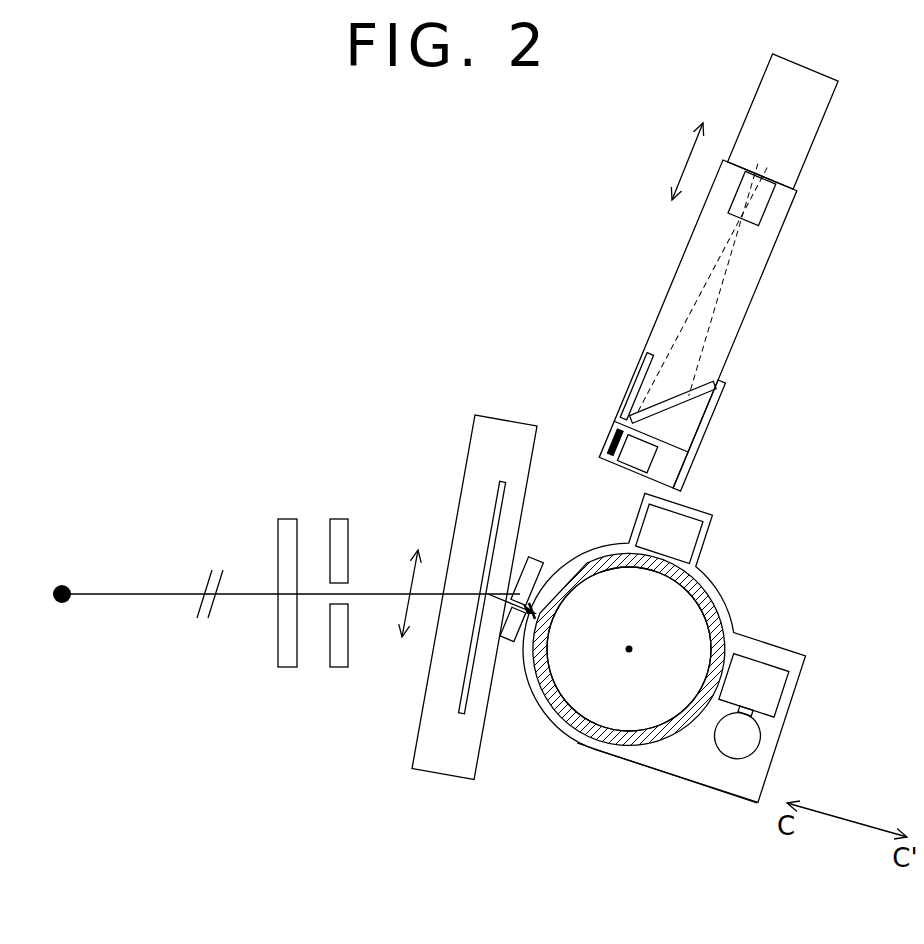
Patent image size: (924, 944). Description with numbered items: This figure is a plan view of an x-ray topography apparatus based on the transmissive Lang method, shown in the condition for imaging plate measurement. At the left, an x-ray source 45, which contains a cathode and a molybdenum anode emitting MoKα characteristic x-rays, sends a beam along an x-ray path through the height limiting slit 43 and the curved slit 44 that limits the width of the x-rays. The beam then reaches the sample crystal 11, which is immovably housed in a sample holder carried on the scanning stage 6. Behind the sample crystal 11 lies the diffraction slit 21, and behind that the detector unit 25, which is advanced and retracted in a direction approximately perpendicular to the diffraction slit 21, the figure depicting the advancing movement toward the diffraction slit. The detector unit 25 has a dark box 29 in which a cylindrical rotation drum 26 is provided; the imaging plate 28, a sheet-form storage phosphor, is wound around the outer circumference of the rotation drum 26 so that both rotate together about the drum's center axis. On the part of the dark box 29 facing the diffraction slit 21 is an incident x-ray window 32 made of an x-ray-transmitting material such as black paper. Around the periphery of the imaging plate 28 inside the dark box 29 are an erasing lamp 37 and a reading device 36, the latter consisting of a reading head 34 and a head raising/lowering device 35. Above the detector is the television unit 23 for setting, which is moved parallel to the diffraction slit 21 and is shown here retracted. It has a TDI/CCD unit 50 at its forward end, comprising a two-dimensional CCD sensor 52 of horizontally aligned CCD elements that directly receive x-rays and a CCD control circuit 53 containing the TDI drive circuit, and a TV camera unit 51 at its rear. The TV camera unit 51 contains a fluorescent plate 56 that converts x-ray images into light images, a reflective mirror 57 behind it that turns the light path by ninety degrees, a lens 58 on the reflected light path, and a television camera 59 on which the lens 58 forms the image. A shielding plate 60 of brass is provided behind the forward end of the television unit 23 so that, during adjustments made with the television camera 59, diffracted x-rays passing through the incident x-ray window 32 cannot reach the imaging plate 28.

The scanning stage 6 is at (416, 733).
The sample crystal 11 is at (493, 515).
The diffraction slit 21 is at (507, 640).
The television unit for setting 23 is at (630, 228).
The detector unit 25 is at (757, 598).
The rotation drum 26 is at (587, 717).
The imaging plate 28 is at (582, 565).
The dark box 29 is at (610, 756).
The incident x-ray window 32 is at (519, 634).
The reading head 34 is at (768, 678).
The head raising/lowering device 35 is at (789, 733).
The reading device 36 is at (815, 702).
The erasing lamp 37 is at (672, 540).
The height limiting slit 43 is at (287, 519).
The curved slit 44 is at (338, 519).
The x-ray source 45 is at (60, 590).
The TDI/CCD unit 50 is at (703, 482).
The TV camera unit 51 is at (900, 104).
The two-dimensional CCD sensor 52 is at (611, 433).
The CCD control circuit 53 is at (632, 457).
The fluorescent plate 56 is at (642, 358).
The reflective mirror 57 is at (683, 390).
The lens 58 is at (758, 207).
The television camera 59 is at (775, 87).
The shielding plate 60 is at (712, 428).